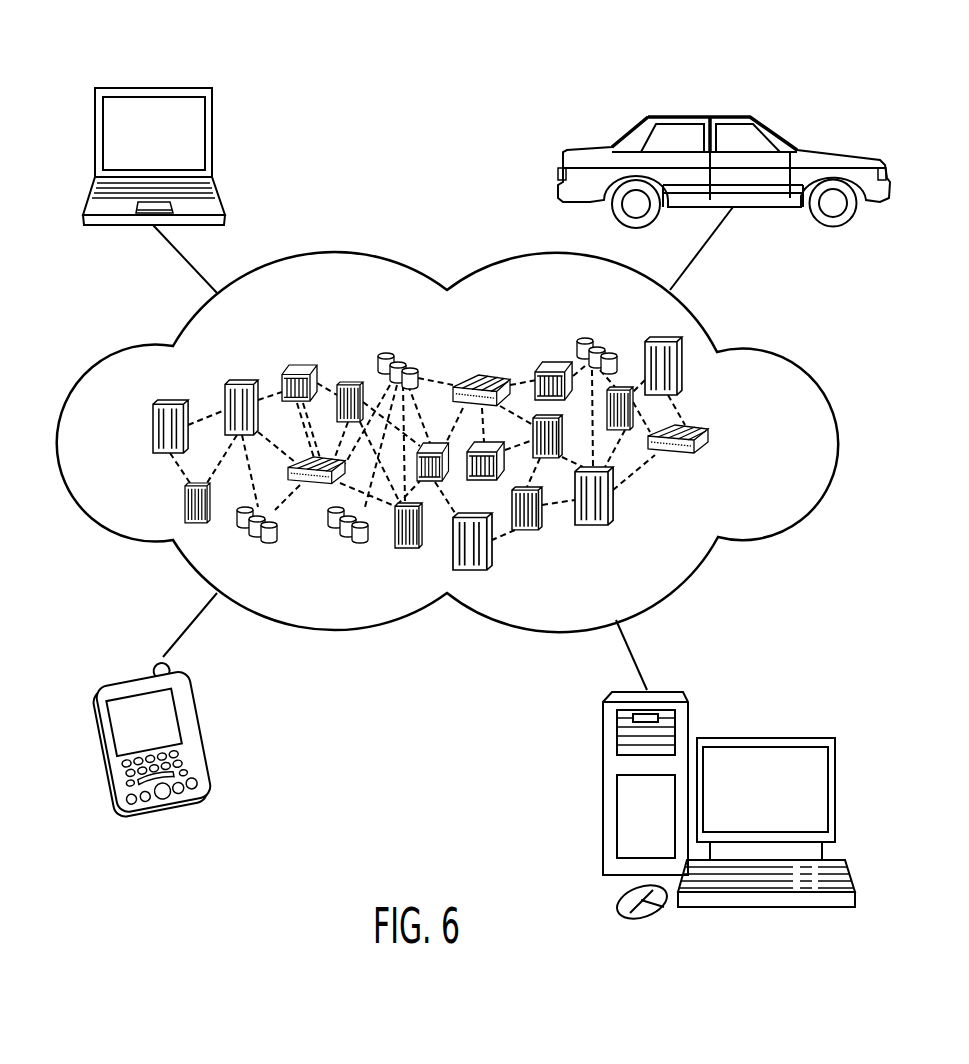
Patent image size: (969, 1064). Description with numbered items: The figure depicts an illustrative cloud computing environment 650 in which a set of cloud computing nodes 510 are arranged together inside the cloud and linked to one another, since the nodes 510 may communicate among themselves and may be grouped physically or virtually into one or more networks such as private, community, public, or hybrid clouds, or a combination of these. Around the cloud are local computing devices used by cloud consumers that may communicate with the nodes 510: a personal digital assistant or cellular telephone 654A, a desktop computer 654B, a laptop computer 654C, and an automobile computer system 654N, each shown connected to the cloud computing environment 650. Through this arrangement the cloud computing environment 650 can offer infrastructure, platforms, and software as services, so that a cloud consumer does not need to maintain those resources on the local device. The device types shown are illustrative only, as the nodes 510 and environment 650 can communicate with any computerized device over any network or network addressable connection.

The cloud computing environment 650 is at (777, 350).
The cloud computing nodes 510 is at (723, 444).
The personal digital assistant (PDA) or cellular telephone 654A is at (132, 678).
The desktop computer 654B is at (764, 738).
The laptop computer 654C is at (155, 88).
The automobile computer system 654N is at (702, 117).